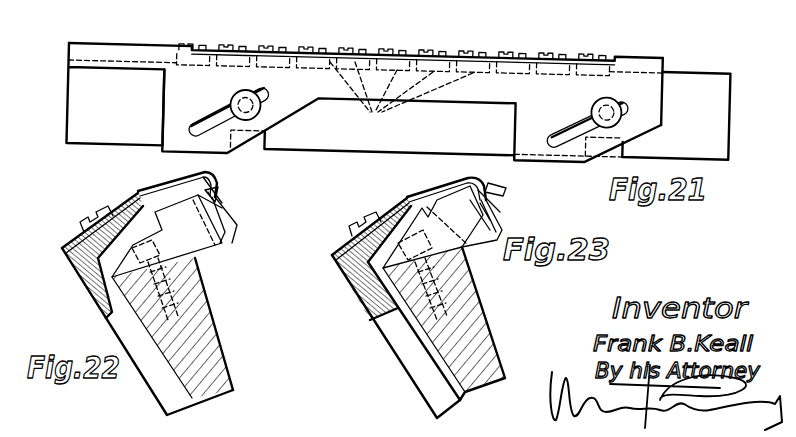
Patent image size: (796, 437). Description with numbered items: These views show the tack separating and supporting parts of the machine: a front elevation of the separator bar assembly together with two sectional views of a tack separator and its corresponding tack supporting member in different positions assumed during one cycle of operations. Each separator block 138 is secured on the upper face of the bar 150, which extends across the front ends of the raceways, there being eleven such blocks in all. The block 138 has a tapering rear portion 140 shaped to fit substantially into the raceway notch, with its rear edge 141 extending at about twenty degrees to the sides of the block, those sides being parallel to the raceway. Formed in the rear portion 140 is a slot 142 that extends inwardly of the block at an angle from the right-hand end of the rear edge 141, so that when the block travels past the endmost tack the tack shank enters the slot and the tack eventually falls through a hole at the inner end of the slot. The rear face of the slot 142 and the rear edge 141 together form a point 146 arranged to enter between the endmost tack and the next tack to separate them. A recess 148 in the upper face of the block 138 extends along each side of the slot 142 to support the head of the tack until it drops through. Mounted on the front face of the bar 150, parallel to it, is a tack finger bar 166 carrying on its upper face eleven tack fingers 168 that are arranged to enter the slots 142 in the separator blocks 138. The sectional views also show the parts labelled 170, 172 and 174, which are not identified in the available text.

In FIG. 21, the separator block 138 is at (401, 98).
In FIG. 22, the separator block 138 is at (198, 245).
In FIG. 23, the separator block 138 is at (443, 248).
In FIG. 22, the tapering rear portion 140 is at (218, 197).
In FIG. 23, the tapering rear portion 140 is at (497, 187).
In FIG. 22, the rear edge 141 is at (228, 203).
In FIG. 23, the rear edge 141 is at (500, 188).
In FIG. 22, the slot 142 is at (230, 236).
In FIG. 23, the slot 142 is at (480, 242).
In FIG. 23, the point 146 is at (500, 202).
In FIG. 22, the recess 148 is at (220, 212).
In FIG. 23, the recess 148 is at (487, 197).
In FIG. 21, the bar 150 is at (77, 113).
In FIG. 22, the bar 150 is at (210, 328).
In FIG. 23, the bar 150 is at (485, 333).
In FIG. 21, the tack finger bar 166 is at (110, 48).
In FIG. 22, the tack finger bar 166 is at (88, 277).
In FIG. 23, the tack finger bar 166 is at (355, 283).
In FIG. 21, the tack finger 168 is at (437, 53).
In FIG. 22, the tack finger 168 is at (160, 188).
In FIG. 23, the tack finger 168 is at (437, 192).
In FIG. 21, the intermediate block 170 is at (170, 107).
In FIG. 22, the intermediate block 170 is at (168, 378).
In FIG. 23, the intermediate block 170 is at (410, 362).
In FIG. 21, the slot 172 is at (217, 120).
In FIG. 21, the screw 174 is at (240, 93).